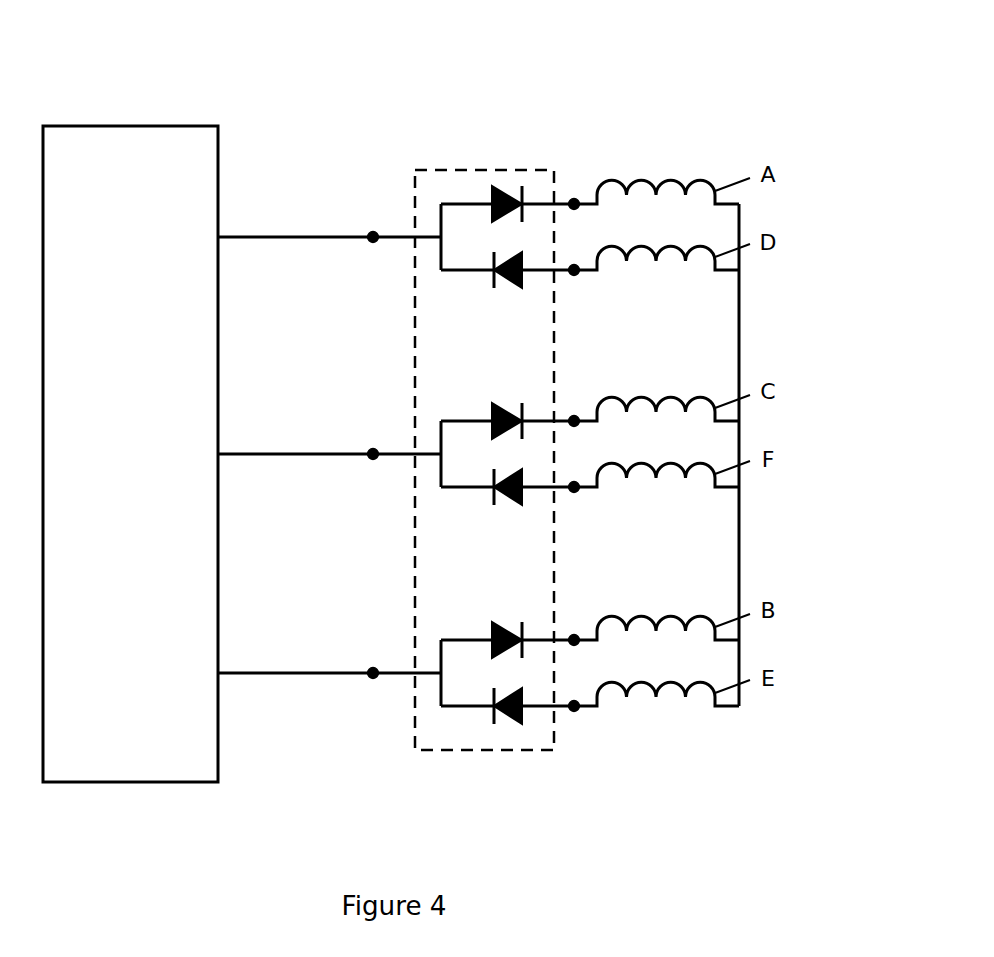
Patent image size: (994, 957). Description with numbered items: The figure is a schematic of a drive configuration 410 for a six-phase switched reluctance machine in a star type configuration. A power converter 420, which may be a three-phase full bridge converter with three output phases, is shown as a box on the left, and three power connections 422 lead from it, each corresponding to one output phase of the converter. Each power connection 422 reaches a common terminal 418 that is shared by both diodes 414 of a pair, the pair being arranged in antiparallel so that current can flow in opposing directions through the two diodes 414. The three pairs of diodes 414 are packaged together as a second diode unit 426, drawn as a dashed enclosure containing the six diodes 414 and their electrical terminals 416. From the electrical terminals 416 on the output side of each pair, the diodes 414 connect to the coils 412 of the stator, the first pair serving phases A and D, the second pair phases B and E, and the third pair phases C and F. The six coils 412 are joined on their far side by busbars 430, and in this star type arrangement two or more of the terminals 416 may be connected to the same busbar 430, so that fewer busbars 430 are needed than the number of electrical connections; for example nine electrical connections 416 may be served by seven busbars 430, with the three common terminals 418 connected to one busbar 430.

The drive configuration 410 is at (760, 82).
The coils 412 is at (648, 180).
The diodes 414 is at (492, 195).
The electrical terminals 416 is at (368, 241).
The common terminal 418 is at (373, 237).
The power converter 420 is at (130, 454).
The power connections 422 is at (247, 235).
The second diode unit 426 is at (422, 752).
The busbars 430 is at (589, 206).